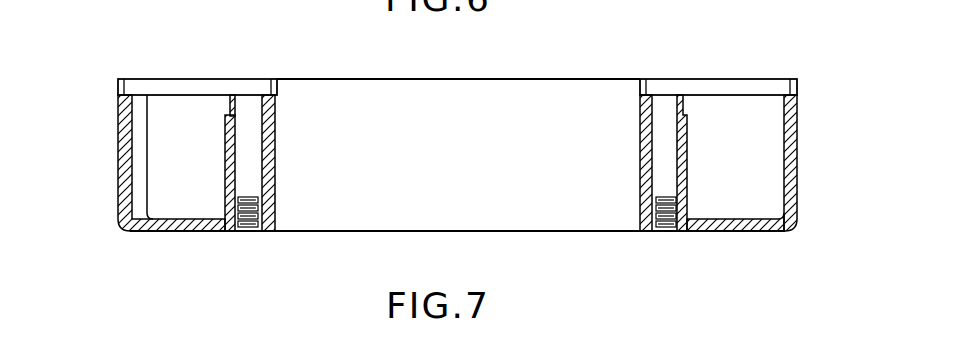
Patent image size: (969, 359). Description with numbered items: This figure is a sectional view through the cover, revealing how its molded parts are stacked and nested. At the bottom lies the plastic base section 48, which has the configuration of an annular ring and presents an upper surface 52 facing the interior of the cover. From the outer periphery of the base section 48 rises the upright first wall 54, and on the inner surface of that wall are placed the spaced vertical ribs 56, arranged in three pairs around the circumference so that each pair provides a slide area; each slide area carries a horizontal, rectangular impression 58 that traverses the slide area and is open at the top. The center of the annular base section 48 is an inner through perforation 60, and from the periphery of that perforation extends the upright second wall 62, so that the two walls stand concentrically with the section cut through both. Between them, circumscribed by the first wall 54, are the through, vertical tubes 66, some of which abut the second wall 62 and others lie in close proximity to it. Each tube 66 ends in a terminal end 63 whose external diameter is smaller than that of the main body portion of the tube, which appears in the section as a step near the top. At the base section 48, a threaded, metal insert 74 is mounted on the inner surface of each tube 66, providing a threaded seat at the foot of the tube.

The base section 48 is at (717, 232).
The upper surface 52 is at (592, 232).
The upright first wall 54 is at (797, 107).
The spaced vertical ribs 56 is at (142, 192).
The horizontal rectangular impression 58 is at (118, 148).
The inner through perforation 60 is at (320, 110).
The upright second wall 62 is at (637, 135).
The terminal end 63 is at (227, 107).
The vertical tubes 66 is at (223, 137).
The threaded metal insert 74 is at (248, 232).